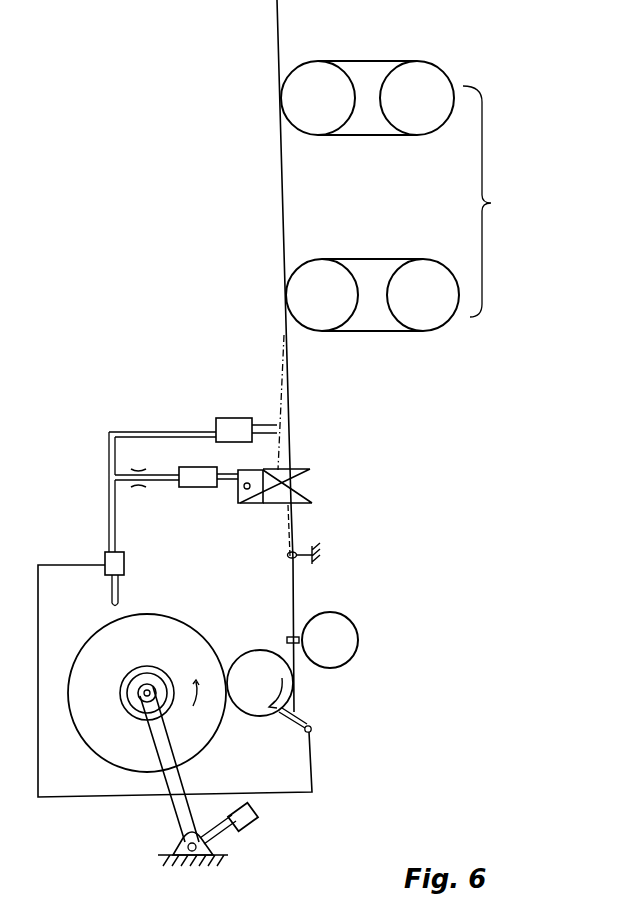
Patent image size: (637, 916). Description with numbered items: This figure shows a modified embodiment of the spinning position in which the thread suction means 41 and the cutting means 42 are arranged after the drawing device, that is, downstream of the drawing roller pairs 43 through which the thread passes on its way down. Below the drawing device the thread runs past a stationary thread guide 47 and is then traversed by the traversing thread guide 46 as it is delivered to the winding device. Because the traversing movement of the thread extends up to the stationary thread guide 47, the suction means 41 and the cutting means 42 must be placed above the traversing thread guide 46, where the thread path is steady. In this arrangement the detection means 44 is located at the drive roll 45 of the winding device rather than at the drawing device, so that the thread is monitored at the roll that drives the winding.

The thread suction means 41 is at (262, 421).
The cutting means 42 is at (204, 477).
The pairs of drawing rollers 43 is at (494, 201).
The detection means 44 is at (297, 717).
The drive roll 45 is at (256, 658).
The traversing thread guide 46 is at (283, 627).
The stationary thread guide 47 is at (300, 550).